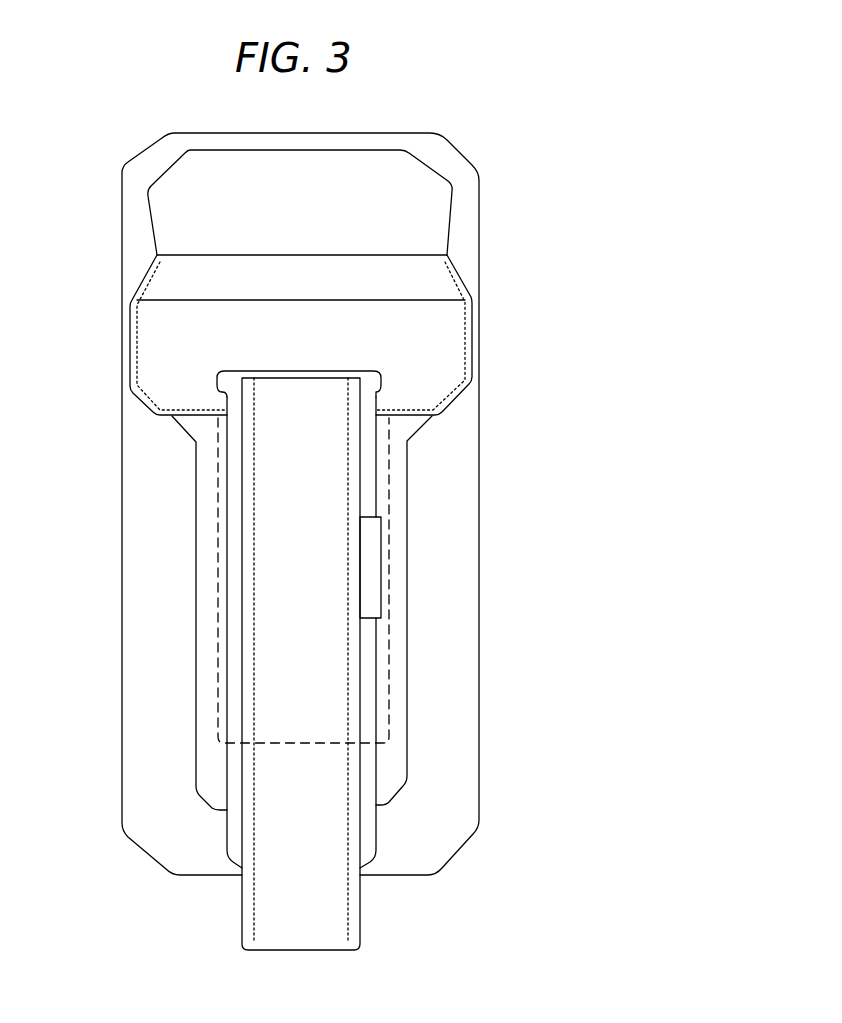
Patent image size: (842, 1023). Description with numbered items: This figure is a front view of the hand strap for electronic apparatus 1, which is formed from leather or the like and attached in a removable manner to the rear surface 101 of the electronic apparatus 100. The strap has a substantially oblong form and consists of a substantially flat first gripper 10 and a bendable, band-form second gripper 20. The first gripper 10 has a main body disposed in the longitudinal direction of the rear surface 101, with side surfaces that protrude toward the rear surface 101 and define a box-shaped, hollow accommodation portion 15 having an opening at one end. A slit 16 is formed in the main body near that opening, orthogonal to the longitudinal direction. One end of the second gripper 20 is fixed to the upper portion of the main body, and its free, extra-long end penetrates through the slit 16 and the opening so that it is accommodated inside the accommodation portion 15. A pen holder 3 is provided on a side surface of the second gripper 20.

The hand strap for electronic apparatus 1 is at (180, 578).
The pen holder 3 is at (370, 575).
The first gripper 10 is at (388, 768).
The accommodation portion 15 is at (385, 497).
The slit 16 is at (372, 378).
The second gripper 20 is at (340, 674).
The electronic apparatus 100 is at (158, 695).
The rear surface 101 is at (160, 481).